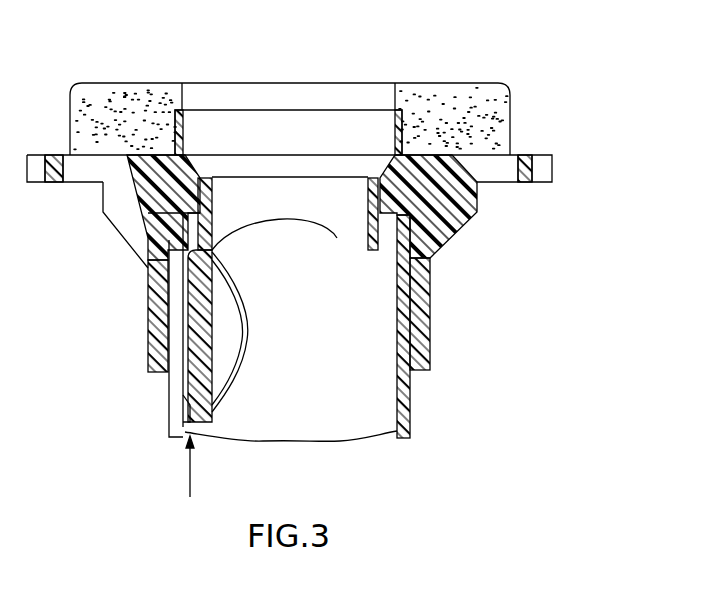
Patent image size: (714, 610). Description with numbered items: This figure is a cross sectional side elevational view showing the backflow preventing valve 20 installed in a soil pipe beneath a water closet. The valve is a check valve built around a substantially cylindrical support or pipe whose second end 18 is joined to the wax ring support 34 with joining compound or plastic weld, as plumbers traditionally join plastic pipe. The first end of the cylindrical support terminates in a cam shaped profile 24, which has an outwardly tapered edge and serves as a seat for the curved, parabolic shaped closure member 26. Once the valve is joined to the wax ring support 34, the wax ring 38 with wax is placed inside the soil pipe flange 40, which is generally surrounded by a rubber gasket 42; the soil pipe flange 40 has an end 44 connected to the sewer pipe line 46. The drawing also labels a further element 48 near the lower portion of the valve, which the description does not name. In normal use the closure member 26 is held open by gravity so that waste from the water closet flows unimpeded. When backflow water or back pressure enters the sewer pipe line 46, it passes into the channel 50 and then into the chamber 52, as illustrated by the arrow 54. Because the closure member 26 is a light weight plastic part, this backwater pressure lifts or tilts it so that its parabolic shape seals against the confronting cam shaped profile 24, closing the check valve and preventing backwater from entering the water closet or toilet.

The second end 18 is at (176, 213).
The backflow preventing valve 20 is at (298, 207).
The cam shaped profile 24 is at (337, 238).
The closure member 26 is at (195, 352).
The wax ring support 34 is at (300, 128).
The wax ring 38 is at (510, 118).
The soil pipe flange 40 is at (552, 170).
The rubber gasket 42 is at (477, 212).
The end 44 is at (430, 325).
The sewer pipe line 46 is at (410, 407).
The inner sleeve 48 is at (183, 388).
The channel 50 is at (183, 422).
The chamber 52 is at (185, 393).
The arrow 54 is at (189, 480).